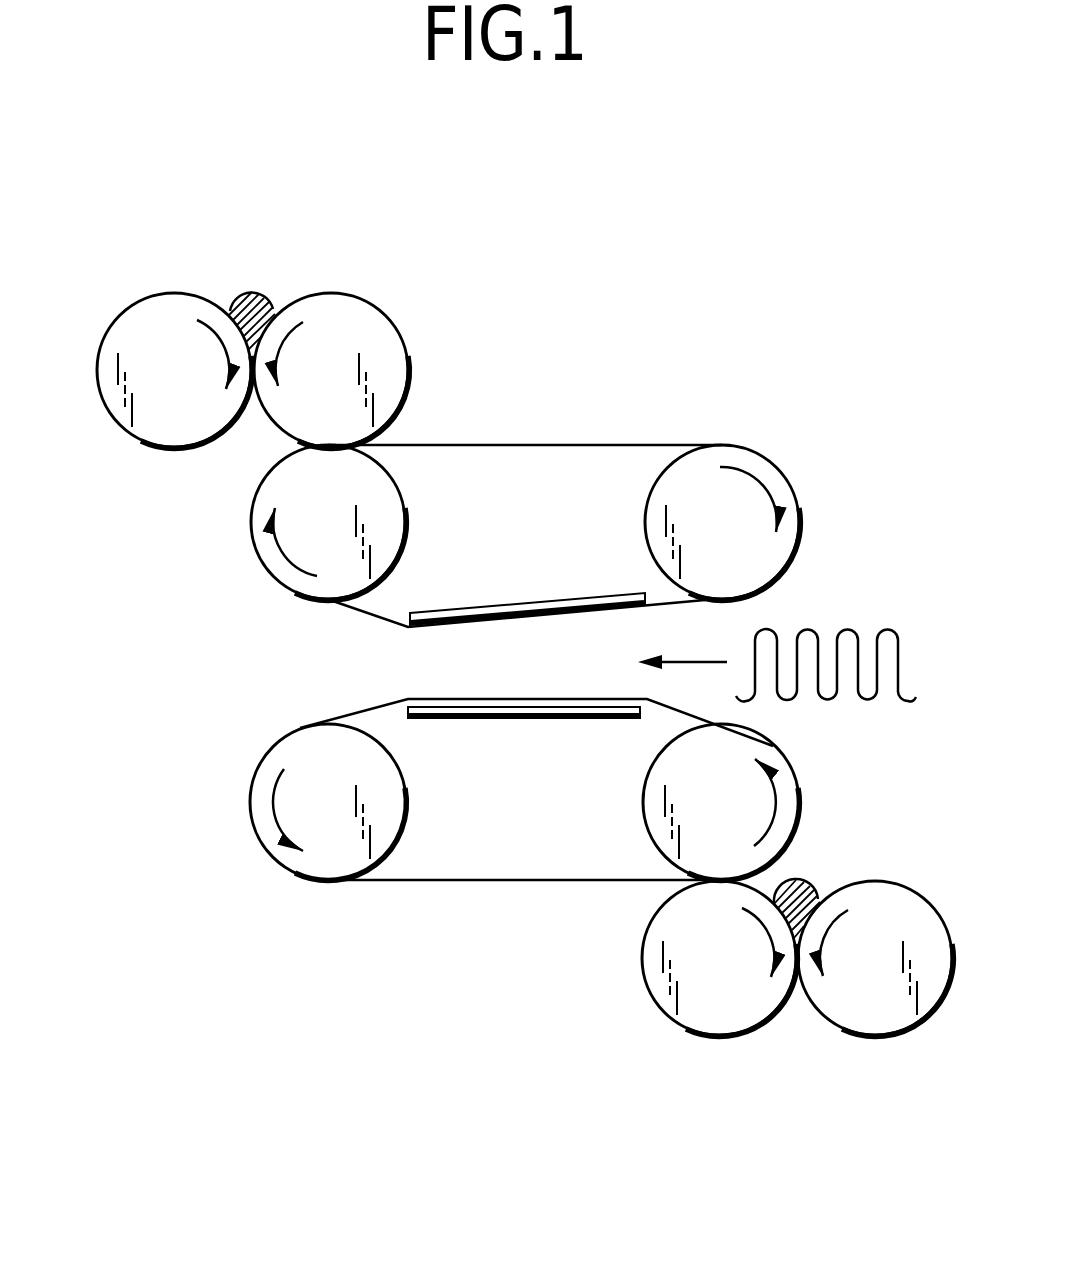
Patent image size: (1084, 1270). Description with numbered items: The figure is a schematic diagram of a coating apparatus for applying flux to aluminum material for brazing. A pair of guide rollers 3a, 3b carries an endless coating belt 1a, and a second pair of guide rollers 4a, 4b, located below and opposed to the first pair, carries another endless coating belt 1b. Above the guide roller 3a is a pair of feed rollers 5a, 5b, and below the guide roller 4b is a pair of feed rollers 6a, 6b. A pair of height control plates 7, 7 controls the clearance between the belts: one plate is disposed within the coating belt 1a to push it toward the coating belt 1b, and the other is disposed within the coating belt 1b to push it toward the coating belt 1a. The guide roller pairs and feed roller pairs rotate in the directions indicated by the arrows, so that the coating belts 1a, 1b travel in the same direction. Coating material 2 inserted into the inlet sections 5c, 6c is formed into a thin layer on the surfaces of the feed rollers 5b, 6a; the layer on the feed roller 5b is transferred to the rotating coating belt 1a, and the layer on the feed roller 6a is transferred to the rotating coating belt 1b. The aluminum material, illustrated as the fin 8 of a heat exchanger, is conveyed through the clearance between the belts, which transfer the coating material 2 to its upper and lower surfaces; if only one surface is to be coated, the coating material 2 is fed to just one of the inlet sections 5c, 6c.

The coating belt 1a is at (525, 445).
The coating belt 1b is at (468, 881).
The coating material 2 is at (263, 300).
The guide roller 3a is at (258, 522).
The guide roller 3b is at (717, 447).
The guide roller 4a is at (252, 797).
The guide roller 4b is at (773, 748).
The feed roller 5a is at (140, 308).
The feed roller 5b is at (343, 305).
The inlet section 5c is at (237, 300).
The feed roller 6a is at (718, 1036).
The feed roller 6b is at (873, 1036).
The inlet section 6c is at (820, 893).
The height control plate 7 is at (447, 612).
The fin 8 is at (887, 630).